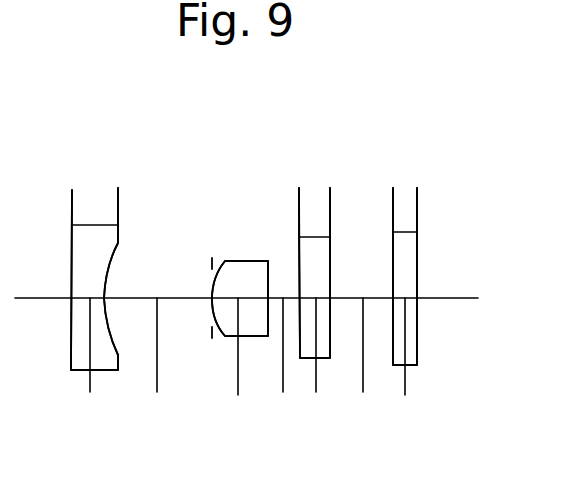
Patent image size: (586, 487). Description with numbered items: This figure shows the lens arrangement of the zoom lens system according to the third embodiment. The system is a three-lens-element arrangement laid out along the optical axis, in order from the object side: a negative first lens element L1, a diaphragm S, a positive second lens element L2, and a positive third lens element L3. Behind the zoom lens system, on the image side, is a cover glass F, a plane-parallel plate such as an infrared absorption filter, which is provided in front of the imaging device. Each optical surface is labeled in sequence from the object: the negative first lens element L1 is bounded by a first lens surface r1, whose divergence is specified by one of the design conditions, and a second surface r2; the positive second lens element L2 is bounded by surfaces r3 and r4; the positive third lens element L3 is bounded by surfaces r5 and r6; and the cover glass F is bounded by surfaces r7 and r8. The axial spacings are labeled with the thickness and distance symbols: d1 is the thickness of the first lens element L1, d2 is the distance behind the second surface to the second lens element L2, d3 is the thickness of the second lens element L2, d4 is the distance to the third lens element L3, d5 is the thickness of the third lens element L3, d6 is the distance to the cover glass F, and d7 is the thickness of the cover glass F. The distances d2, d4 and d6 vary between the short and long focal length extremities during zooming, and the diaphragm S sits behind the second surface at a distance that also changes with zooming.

The negative first lens element L1 is at (99, 241).
The positive second lens element L2 is at (242, 261).
The positive third lens element L3 is at (318, 261).
The diaphragm S is at (212, 260).
The cover glass F is at (404, 250).
The first lens surface r1 is at (71, 190).
The second lens surface r2 is at (118, 188).
The third lens surface r3 is at (225, 261).
The fourth lens surface r4 is at (268, 261).
The fifth lens surface r5 is at (299, 188).
The sixth lens surface r6 is at (330, 188).
The seventh surface r7 is at (393, 188).
The eighth surface r8 is at (417, 188).
The lens-element thickness d1 is at (90, 392).
The distance between lens elements d2 is at (157, 392).
The lens-element thickness d3 is at (238, 395).
The distance between lens elements d4 is at (283, 392).
The lens-element thickness d5 is at (316, 392).
The distance between lens elements d6 is at (363, 392).
The lens-element thickness d7 is at (405, 395).